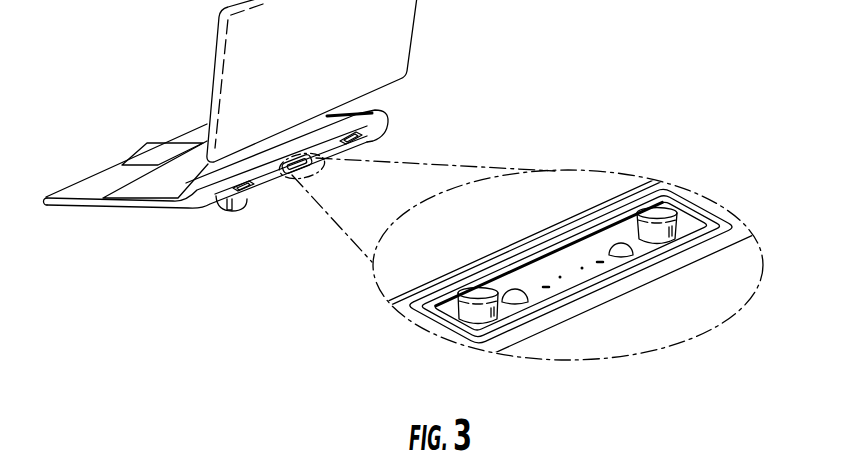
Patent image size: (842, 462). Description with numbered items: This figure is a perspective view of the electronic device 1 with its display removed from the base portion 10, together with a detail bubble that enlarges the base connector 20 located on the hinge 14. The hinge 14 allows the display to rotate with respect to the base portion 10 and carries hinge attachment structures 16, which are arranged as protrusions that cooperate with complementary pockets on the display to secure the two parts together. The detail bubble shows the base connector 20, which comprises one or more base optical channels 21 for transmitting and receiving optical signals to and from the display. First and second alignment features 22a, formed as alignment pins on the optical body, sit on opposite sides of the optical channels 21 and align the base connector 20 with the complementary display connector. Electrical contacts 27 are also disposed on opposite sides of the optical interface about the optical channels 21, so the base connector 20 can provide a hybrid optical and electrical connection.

The electronic device 1 is at (118, 44).
The base portion 10 is at (89, 201).
The hinge 14 is at (278, 188).
The hinge attachment structure 16 is at (250, 193).
The base connector 20 is at (594, 256).
The base optical channels 21 is at (560, 277).
The alignment features 22a is at (662, 209).
The electrical contacts 27 is at (623, 242).